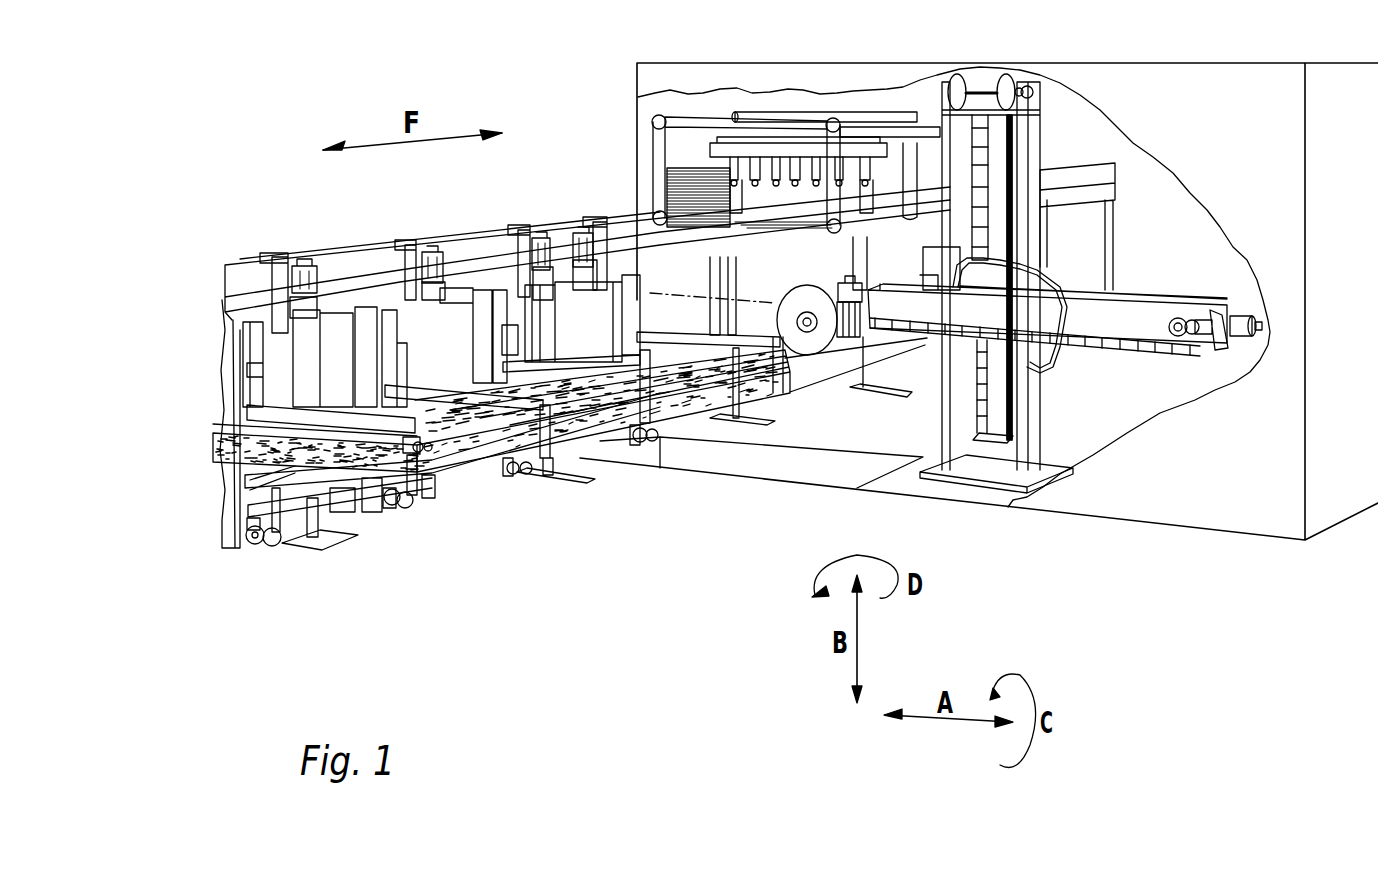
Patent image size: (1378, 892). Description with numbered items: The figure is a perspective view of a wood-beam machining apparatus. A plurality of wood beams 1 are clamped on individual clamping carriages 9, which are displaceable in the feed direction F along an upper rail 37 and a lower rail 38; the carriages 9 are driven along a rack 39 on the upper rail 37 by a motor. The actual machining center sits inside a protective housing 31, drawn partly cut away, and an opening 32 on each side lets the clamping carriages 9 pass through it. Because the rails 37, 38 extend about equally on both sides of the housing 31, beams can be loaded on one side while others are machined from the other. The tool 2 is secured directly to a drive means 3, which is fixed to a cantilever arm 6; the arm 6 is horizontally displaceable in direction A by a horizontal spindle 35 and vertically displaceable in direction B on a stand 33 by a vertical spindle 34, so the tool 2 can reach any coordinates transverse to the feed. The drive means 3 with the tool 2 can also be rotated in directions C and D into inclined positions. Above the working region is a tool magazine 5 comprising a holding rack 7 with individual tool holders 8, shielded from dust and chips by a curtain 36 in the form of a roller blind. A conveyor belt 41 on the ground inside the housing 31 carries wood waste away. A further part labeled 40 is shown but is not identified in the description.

The wood beams 1 is at (453, 423).
The tool 2 is at (818, 342).
The drive means 3 is at (857, 330).
The tool magazine 5 is at (687, 150).
The cantilever arm 6 is at (848, 300).
The holding rack 7 is at (783, 153).
The tool holders 8 is at (720, 165).
The clamping carriages 9 is at (487, 465).
The protective housing 31 is at (1152, 113).
The opening 32 is at (668, 316).
The stand 33 is at (1035, 423).
The vertical spindle 34 is at (980, 138).
The horizontal spindle 35 is at (1113, 338).
The curtain 36 is at (690, 195).
The upper rail 37 is at (372, 288).
The lower rail 38 is at (580, 427).
The rack 39 is at (482, 273).
The drive motor 40 is at (295, 257).
The conveyor belt 41 is at (770, 457).